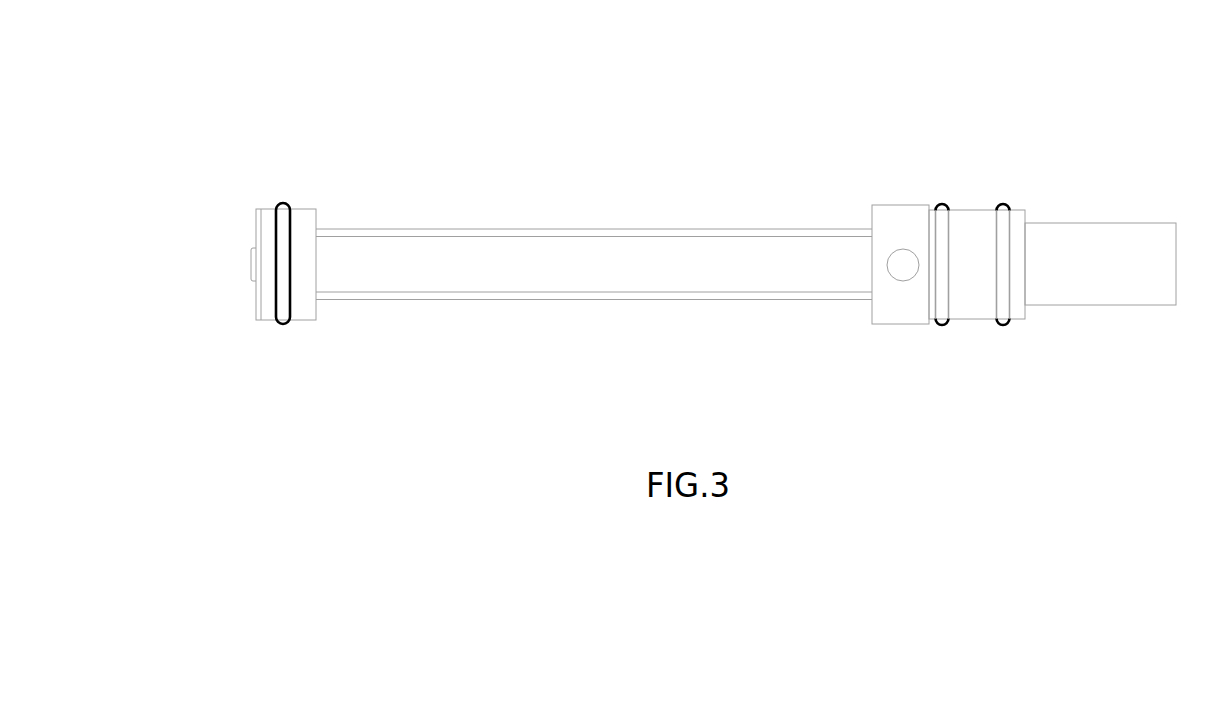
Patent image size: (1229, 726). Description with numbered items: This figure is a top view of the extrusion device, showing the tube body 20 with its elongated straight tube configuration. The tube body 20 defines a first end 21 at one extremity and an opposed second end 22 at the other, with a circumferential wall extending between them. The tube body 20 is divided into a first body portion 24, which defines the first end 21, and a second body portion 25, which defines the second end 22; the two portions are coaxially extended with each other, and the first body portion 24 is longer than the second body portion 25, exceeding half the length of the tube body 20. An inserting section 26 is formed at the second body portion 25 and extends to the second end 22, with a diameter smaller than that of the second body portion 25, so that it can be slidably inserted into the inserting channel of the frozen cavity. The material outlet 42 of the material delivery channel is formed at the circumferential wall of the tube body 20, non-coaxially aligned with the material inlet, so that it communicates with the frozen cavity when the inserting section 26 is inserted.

The tube body 20 is at (222, 170).
The first end 21 is at (221, 316).
The second end 22 is at (1183, 189).
The first body portion 24 is at (866, 328).
The second body portion 25 is at (1185, 370).
The inserting section 26 is at (1175, 337).
The material outlet 42 is at (902, 216).